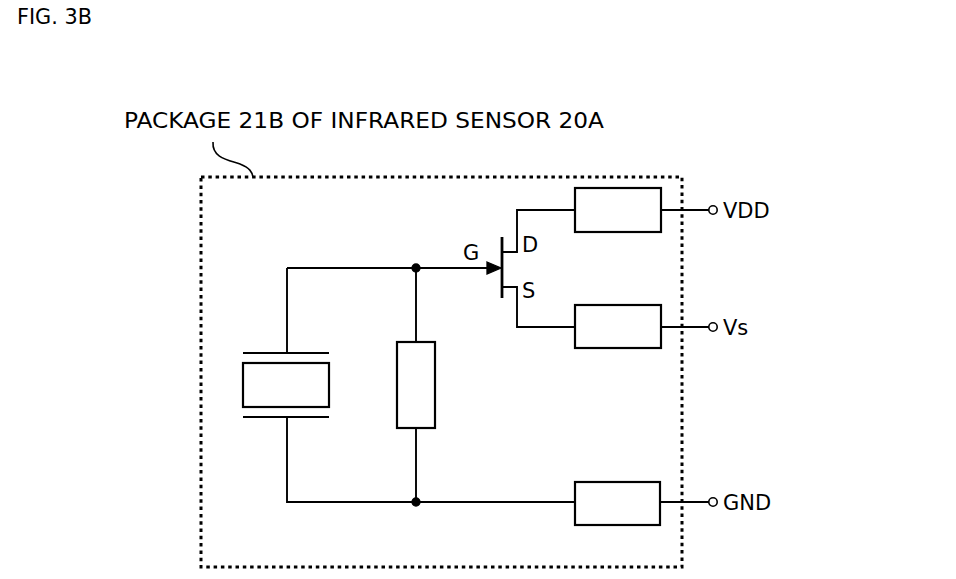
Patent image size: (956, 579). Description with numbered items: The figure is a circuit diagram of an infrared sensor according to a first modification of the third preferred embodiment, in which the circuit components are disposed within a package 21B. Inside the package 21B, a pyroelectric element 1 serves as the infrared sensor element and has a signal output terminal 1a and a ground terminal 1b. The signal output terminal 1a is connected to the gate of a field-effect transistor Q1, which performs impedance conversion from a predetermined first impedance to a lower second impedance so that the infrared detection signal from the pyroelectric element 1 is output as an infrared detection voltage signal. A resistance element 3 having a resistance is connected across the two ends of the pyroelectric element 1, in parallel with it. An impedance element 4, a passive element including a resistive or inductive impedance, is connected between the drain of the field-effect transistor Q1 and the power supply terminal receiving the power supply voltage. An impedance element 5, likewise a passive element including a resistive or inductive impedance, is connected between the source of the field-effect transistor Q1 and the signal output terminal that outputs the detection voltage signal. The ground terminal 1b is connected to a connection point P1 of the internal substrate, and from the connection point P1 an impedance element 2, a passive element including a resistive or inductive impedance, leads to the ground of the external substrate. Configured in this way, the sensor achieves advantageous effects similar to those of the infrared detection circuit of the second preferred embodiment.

The package 21B is at (441, 372).
The pyroelectric element 1 is at (329, 385).
The signal output terminal 1a is at (283, 353).
The ground terminal 1b is at (283, 417).
The resistance element 3 is at (425, 342).
The field-effect transistor Q1 is at (500, 248).
The impedance element 4 is at (592, 232).
The impedance element 5 is at (639, 305).
The impedance element 2 is at (618, 482).
The connection point P1 is at (416, 506).